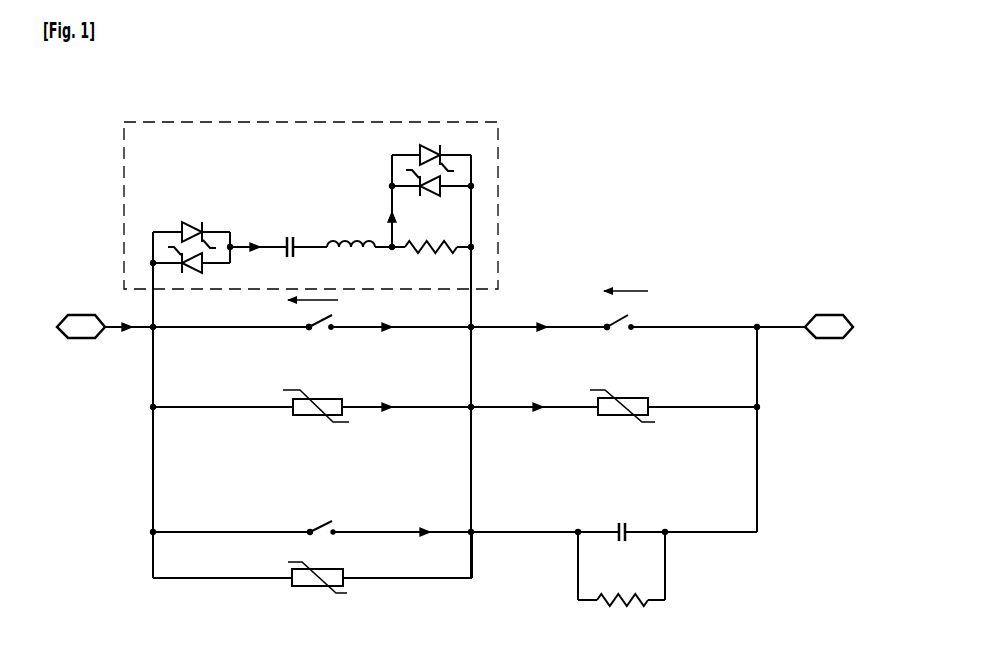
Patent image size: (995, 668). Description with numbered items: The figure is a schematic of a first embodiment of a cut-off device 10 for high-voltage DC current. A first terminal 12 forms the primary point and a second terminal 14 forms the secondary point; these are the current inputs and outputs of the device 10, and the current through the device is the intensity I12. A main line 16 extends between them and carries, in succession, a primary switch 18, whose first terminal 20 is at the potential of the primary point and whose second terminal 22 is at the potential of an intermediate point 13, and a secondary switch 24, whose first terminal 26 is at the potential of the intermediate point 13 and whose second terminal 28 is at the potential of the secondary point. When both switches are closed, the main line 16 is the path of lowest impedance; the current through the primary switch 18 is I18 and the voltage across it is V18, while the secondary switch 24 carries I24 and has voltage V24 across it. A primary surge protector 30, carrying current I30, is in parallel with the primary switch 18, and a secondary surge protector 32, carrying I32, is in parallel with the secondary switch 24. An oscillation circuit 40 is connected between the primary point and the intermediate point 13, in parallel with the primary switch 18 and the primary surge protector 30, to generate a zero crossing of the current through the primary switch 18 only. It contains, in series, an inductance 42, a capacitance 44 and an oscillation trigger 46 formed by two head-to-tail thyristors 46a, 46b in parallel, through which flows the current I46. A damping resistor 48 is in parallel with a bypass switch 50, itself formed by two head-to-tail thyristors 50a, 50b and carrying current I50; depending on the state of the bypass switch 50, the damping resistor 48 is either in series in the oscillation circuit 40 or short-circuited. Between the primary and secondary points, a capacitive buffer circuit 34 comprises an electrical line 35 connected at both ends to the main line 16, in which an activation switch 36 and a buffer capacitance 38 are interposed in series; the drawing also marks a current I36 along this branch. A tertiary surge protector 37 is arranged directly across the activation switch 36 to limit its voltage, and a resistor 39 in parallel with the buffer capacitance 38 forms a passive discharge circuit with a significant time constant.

The cut-off device 10 is at (677, 225).
The first terminal 12 is at (83, 313).
The intermediate point 13 is at (474, 326).
The second terminal 14 is at (827, 313).
The main line 16 is at (232, 328).
The primary switch 18 is at (326, 338).
The first terminal of the primary switch 20 is at (310, 330).
The second terminal of the primary switch 22 is at (333, 325).
The secondary switch 24 is at (660, 286).
The first terminal of the secondary switch 26 is at (606, 329).
The second terminal of the secondary switch 28 is at (632, 329).
The primary surge protector 30 is at (316, 415).
The secondary surge protector 32 is at (615, 415).
The capacitive buffer circuit 34 is at (400, 546).
The electrical line 35 is at (528, 534).
The activation switch 36 is at (320, 522).
The tertiary surge protector 37 is at (312, 587).
The buffer capacitance 38 is at (620, 523).
The resistor 39 is at (610, 606).
The oscillation circuit 40 is at (289, 121).
The inductance 42 is at (349, 240).
The capacitance 44 is at (299, 236).
The oscillation trigger 46 is at (187, 238).
The thyristor 46a is at (187, 228).
The thyristor 46b is at (192, 271).
The damping resistor 48 is at (429, 249).
The bypass switch 50 is at (457, 148).
The thyristor 50a is at (422, 150).
The thyristor 50b is at (442, 190).
The intensity of the current through the device I12 is at (130, 315).
The intensity of the current through the primary switch I18 is at (392, 315).
The intensity of the current through the secondary switch I24 is at (546, 315).
The intensity of the current through the primary surge protector I30 is at (392, 395).
The intensity of the current through the secondary surge protector I32 is at (545, 395).
The current through bypass path I36 is at (430, 522).
The intensity of the current through the oscillation trigger I46 is at (258, 237).
The intensity of the current through the bypass switch I50 is at (406, 202).
The voltage across the primary switch V18 is at (308, 299).
The voltage across the secondary switch V24 is at (626, 277).